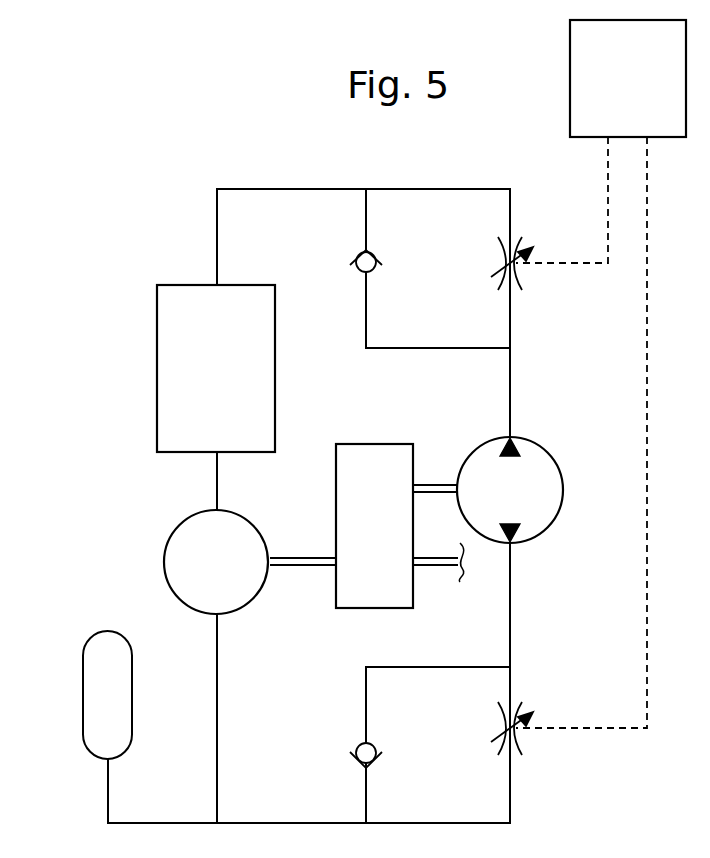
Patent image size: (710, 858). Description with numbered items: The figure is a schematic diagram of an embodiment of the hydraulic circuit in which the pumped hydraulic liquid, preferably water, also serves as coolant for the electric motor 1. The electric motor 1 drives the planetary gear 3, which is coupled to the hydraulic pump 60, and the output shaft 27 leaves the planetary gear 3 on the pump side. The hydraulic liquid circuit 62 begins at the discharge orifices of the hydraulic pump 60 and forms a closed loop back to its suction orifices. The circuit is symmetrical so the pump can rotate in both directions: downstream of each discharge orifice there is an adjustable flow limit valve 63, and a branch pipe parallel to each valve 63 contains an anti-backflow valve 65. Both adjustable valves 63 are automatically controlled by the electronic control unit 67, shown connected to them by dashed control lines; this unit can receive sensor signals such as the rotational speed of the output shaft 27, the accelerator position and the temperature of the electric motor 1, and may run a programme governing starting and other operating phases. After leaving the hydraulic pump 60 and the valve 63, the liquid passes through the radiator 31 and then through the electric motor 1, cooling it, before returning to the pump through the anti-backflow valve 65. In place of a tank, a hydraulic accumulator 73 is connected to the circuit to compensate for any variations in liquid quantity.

The electric motor 1 is at (178, 545).
The planetary gear 3 is at (351, 484).
The output shaft 27 is at (433, 565).
The radiator 31 is at (178, 343).
The hydraulic pump 60 is at (537, 467).
The hydraulic liquid circuit 62 is at (293, 145).
The adjustable flow limit valve 63 is at (497, 259).
The anti-backflow valve 65 is at (353, 258).
The electronic control unit 67 is at (597, 73).
The hydraulic accumulator 73 is at (101, 667).